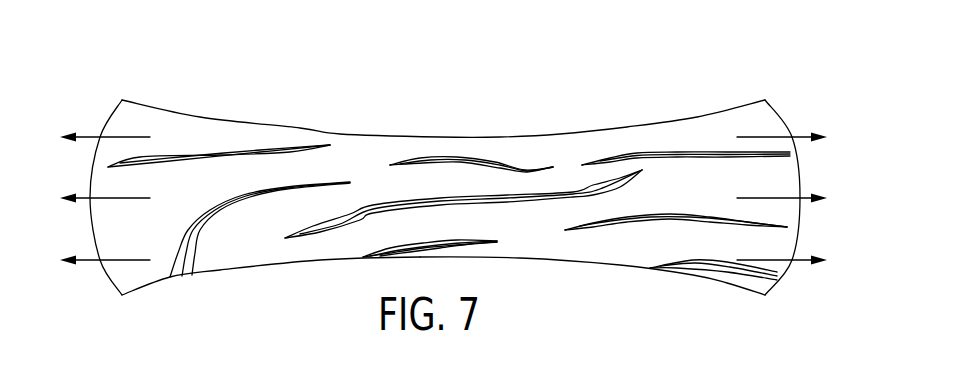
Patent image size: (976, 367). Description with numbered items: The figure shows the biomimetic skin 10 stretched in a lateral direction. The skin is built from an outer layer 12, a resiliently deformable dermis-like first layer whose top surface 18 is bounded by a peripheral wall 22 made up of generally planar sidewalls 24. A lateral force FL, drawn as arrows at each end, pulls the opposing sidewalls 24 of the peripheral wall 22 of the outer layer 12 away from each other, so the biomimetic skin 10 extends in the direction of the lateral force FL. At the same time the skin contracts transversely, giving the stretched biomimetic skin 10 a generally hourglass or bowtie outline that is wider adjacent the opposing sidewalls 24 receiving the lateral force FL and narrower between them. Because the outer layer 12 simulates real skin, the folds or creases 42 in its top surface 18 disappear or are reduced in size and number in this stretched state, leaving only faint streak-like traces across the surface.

The biomimetic skin 10 is at (711, 85).
The outer layer 12 is at (565, 150).
The top surface 18 is at (272, 250).
The peripheral wall 22 is at (622, 265).
The sidewalls 24 is at (108, 121).
The folds or creases 42 is at (292, 155).
The lateral force FL is at (112, 200).